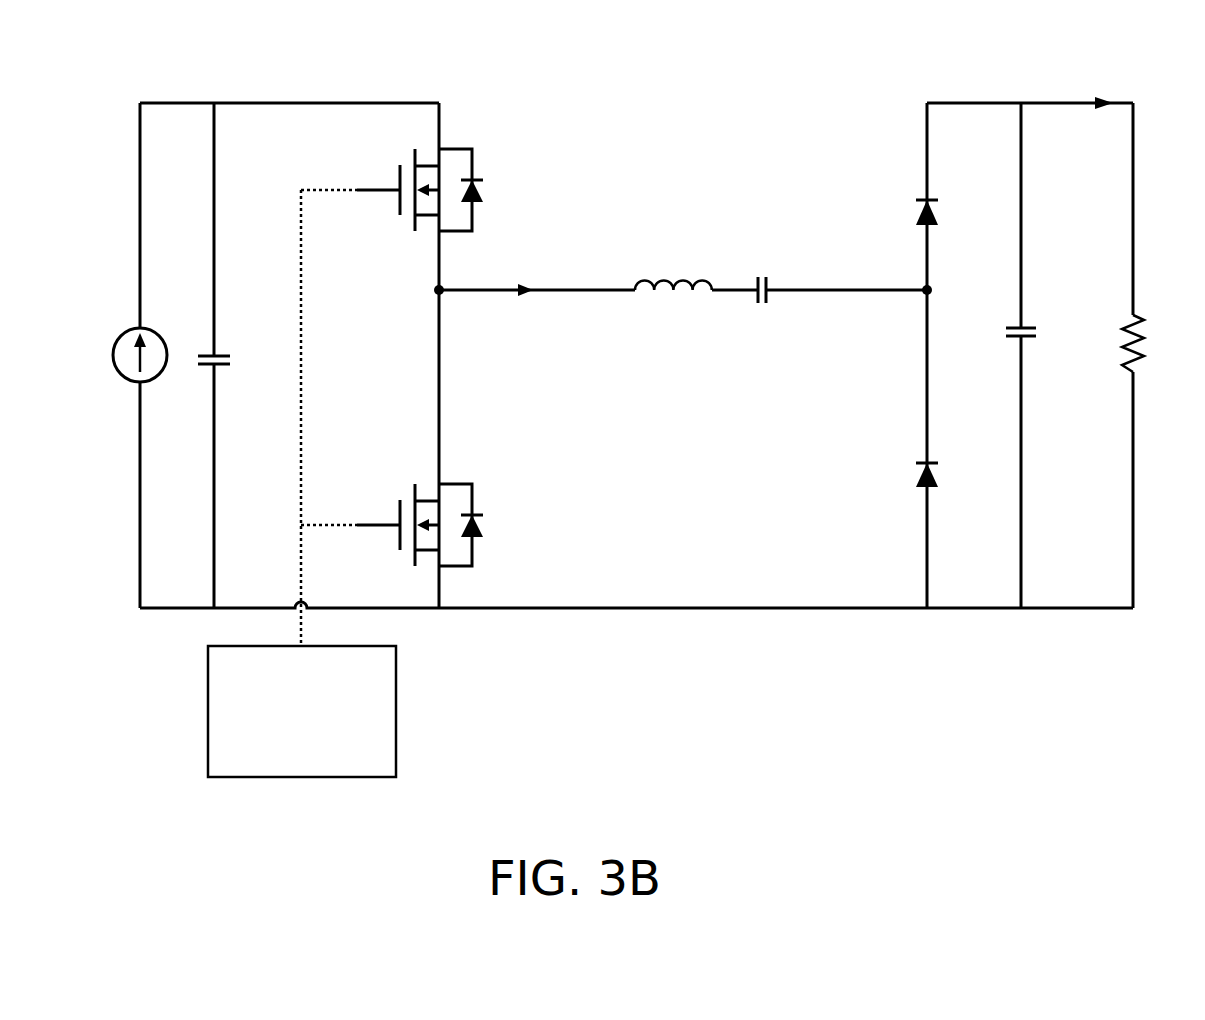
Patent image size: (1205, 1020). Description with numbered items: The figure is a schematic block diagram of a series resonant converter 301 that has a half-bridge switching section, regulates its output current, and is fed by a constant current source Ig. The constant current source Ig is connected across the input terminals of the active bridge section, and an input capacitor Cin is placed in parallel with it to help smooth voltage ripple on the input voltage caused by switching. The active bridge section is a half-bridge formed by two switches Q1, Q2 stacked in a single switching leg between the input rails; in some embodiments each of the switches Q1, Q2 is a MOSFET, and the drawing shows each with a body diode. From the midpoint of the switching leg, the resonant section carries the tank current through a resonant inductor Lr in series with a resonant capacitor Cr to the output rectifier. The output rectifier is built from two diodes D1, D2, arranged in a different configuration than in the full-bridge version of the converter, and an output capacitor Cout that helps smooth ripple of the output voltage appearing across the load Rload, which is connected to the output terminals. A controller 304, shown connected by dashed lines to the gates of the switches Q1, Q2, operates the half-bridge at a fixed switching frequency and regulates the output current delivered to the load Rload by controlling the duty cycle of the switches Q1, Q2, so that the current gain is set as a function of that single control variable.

The series resonant converter 301 is at (246, 74).
The controller 304 is at (281, 741).
The switch Q1 is at (419, 189).
The switch Q2 is at (419, 523).
The first diode D1 is at (912, 225).
The second diode D2 is at (912, 489).
The resonant inductor Lr is at (673, 271).
The resonant capacitor Cr is at (757, 277).
The input capacitor Cin is at (229, 380).
The output capacitor Cout is at (1035, 320).
The load Rload is at (1156, 343).
The constant current source Ig is at (144, 340).